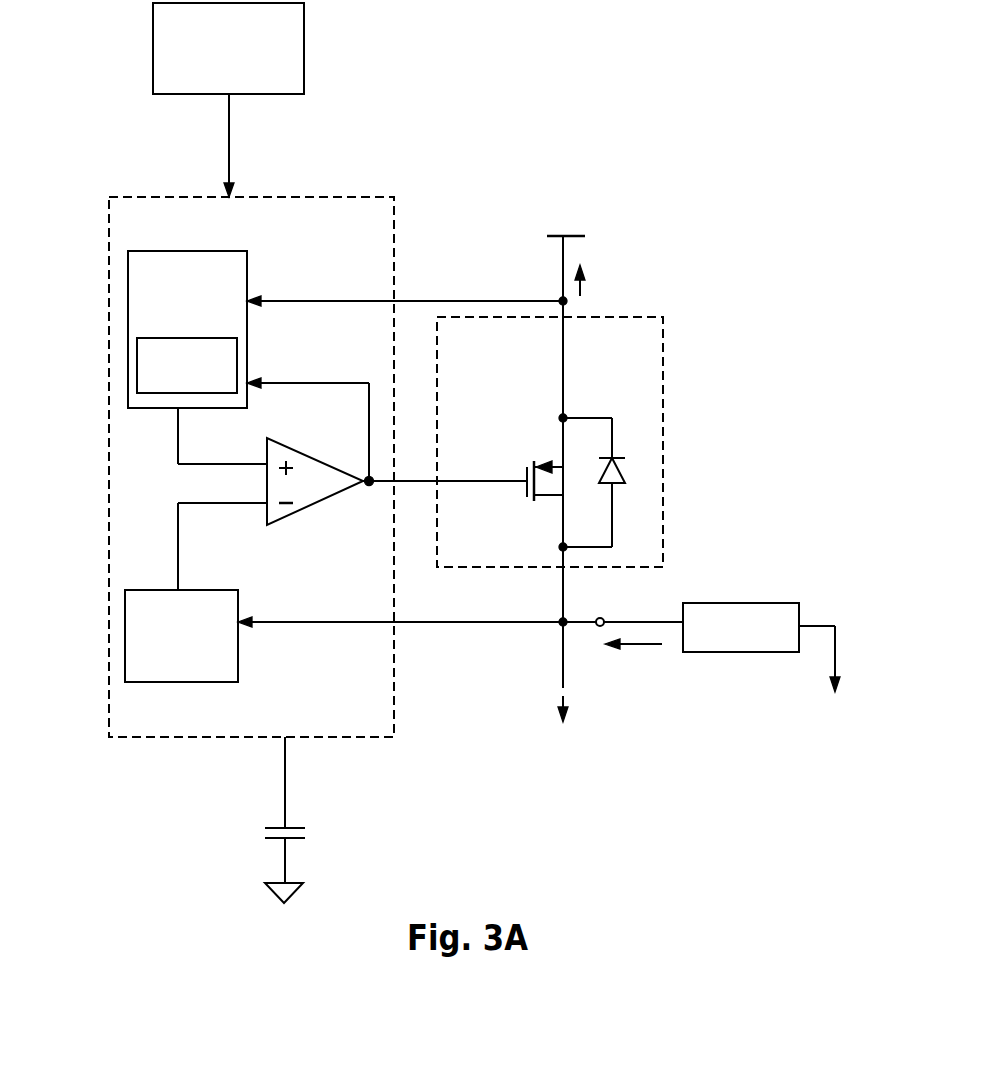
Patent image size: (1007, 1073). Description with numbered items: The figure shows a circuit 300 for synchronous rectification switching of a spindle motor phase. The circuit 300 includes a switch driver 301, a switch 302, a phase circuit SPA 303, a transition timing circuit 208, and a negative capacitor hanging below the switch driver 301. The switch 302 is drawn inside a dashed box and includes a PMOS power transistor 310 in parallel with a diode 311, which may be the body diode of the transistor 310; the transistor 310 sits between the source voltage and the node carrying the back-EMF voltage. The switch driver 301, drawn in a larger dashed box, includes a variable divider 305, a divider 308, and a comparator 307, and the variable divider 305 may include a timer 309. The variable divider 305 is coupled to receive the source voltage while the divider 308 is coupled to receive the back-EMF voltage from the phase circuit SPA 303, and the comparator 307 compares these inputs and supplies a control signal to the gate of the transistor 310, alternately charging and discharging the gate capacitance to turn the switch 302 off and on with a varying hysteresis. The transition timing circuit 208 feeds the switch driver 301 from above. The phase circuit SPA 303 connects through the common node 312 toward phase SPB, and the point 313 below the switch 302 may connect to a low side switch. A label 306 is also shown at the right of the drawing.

The transition timing circuit 208 is at (305, 65).
The circuit 300 is at (775, 66).
The switch driver 301 is at (352, 248).
The switch 302 is at (648, 364).
The phase circuit SPA 303 is at (745, 603).
The variable divider 305 is at (127, 305).
The supply current path 306 is at (726, 262).
The comparator 307 is at (320, 503).
The divider 308 is at (125, 655).
The timer 309 is at (137, 372).
The transistor 310 is at (545, 447).
The diode 311 is at (635, 468).
The common node 312 is at (837, 620).
The point 313 is at (538, 730).